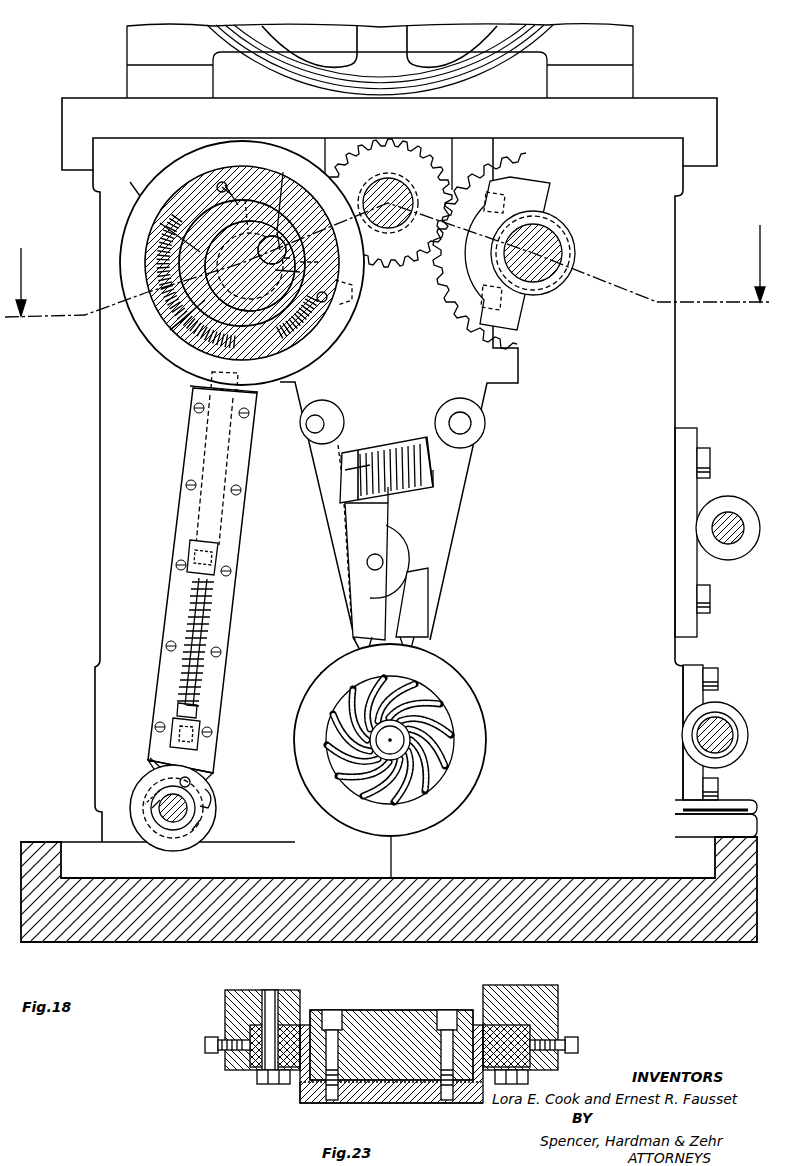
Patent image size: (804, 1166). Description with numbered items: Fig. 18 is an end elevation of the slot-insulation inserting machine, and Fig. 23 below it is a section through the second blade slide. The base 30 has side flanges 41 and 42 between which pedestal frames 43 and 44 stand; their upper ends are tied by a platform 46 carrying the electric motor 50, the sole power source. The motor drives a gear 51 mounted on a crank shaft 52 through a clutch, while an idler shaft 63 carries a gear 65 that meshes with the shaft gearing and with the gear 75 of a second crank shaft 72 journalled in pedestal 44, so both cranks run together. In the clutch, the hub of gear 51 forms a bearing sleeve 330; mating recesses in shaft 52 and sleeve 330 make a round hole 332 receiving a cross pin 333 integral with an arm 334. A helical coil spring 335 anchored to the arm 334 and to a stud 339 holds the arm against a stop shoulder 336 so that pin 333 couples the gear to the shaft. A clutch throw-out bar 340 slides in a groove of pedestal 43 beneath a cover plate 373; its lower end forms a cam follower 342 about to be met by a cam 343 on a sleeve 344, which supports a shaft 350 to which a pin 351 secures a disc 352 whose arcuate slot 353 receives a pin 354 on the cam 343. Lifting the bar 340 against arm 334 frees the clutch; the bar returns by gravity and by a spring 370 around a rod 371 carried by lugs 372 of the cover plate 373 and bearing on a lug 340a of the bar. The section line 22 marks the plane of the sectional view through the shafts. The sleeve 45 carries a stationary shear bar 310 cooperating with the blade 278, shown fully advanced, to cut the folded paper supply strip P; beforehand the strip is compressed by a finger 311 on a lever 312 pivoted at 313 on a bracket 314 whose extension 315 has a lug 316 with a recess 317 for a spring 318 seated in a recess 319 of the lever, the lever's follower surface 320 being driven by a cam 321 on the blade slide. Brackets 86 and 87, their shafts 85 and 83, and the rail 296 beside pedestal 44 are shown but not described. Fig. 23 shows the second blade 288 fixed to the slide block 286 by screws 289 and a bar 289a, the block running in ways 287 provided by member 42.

In FIG. 18, the electric motor 50 is at (127, 44).
In FIG. 18, the platform 46 is at (62, 100).
In FIG. 18, the pedestal frame 43 is at (100, 423).
In FIG. 18, the pedestal frame 44 is at (683, 405).
In FIG. 18, the idler shaft 63 is at (396, 178).
In FIG. 18, the gear 65 is at (400, 138).
In FIG. 18, the gear 75 is at (480, 176).
In FIG. 18, the crank shaft 72 is at (565, 249).
In FIG. 18, the gear 51 is at (158, 222).
In FIG. 18, the crank shaft 52 is at (205, 254).
In FIG. 18, the round hole 332 is at (284, 240).
In FIG. 18, the bearing sleeve 330 is at (247, 200).
In FIG. 18, the cross pin 333 is at (277, 232).
In FIG. 18, the stud 339 is at (225, 185).
In FIG. 18, the stop shoulder 336 is at (318, 262).
In FIG. 18, the arm 334 is at (352, 292).
In FIG. 18, the helical coil spring 335 is at (170, 330).
In FIG. 18, the section line 22 is at (388, 260).
In FIG. 18, the cover plate 373 is at (176, 515).
In FIG. 18, the clutch throw-out bar 340 is at (205, 386).
In FIG. 18, the lug 372 is at (188, 548).
In FIG. 18, the spring 370 is at (188, 602).
In FIG. 18, the rod 371 is at (199, 700).
In FIG. 18, the lug 340a is at (177, 710).
In FIG. 18, the cam follower 342 is at (212, 768).
In FIG. 18, the cam 343 is at (150, 760).
In FIG. 18, the shaft 350 is at (168, 838).
In FIG. 18, the pin 354 is at (180, 780).
In FIG. 18, the arcuate slot 353 is at (210, 797).
In FIG. 18, the disc 352 is at (145, 800).
In FIG. 18, the pin 351 is at (158, 822).
In FIG. 18, the sleeve 344 is at (195, 828).
In FIG. 18, the side flange 41 is at (48, 842).
In FIG. 18, the bracket 314 is at (310, 455).
In FIG. 18, the cam follower surface 320 is at (345, 440).
In FIG. 18, the cam 321 is at (328, 400).
In FIG. 18, the lug 316 is at (435, 410).
In FIG. 18, the extension 315 is at (395, 440).
In FIG. 18, the recess 319 is at (360, 452).
In FIG. 18, the recess 317 is at (432, 490).
In FIG. 18, the spring 318 is at (400, 490).
In FIG. 18, the lever 312 is at (386, 540).
In FIG. 18, the pivot 313 is at (383, 562).
In FIG. 18, the finger 311 is at (420, 645).
In FIG. 18, the blade 278 is at (352, 640).
In FIG. 18, the supply strip P is at (358, 655).
In FIG. 18, the shear bar 310 is at (320, 673).
In FIG. 18, the sleeve 45 is at (475, 733).
In FIG. 18, the bracket 86 is at (732, 496).
In FIG. 18, the shaft 85 is at (738, 518).
In FIG. 18, the bearing bracket 87 is at (745, 710).
In FIG. 18, the shaft 83 is at (735, 738).
In FIG. 18, the rail 296 is at (750, 800).
In FIG. 18, the side flange 42 is at (750, 836).
In FIG. 23, the side flange 42 is at (225, 1012).
In FIG. 18, the base 30 is at (700, 942).
In FIG. 23, the blade 288 is at (302, 1085).
In FIG. 23, the bar 289a is at (300, 1103).
In FIG. 23, the slide block 286 is at (385, 1010).
In FIG. 23, the screws 289 is at (330, 1010).
In FIG. 23, the ways 287 is at (250, 1070).